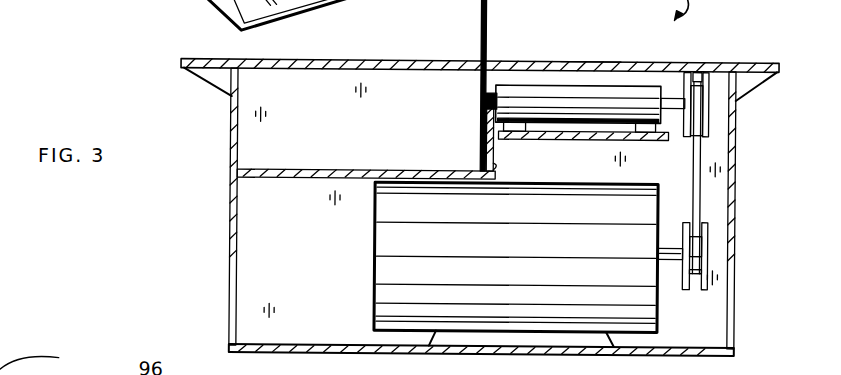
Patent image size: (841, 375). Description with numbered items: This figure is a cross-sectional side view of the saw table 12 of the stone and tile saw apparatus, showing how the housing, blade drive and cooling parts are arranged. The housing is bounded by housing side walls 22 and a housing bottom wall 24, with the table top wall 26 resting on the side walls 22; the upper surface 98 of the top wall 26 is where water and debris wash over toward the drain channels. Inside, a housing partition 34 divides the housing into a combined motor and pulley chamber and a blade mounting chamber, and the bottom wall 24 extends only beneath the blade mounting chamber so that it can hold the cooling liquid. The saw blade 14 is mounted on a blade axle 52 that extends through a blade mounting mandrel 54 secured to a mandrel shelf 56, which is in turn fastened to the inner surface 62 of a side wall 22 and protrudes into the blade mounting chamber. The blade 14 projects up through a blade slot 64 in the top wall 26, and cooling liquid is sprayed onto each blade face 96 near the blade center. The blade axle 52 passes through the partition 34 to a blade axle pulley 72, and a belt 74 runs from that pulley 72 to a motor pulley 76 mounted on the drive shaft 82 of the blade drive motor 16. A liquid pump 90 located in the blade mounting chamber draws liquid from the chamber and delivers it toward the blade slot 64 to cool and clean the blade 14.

The saw table 12 is at (748, 34).
The saw blade 14 is at (478, 10).
The blade drive motor 16 is at (377, 257).
The housing side walls 22 is at (230, 233).
The housing bottom wall 24 is at (344, 358).
The table top wall 26 is at (318, 60).
The housing partition 34 is at (486, 172).
The blade axle 52 is at (492, 90).
The blade mounting mandrel 54 is at (543, 96).
The mandrel shelf 56 is at (516, 140).
The inner surface 62 is at (723, 304).
The blade slot 64 is at (478, 56).
The blade axle pulley 72 is at (707, 107).
The belt 74 is at (692, 167).
The motor pulley 76 is at (709, 248).
The drive shaft 82 is at (676, 263).
The liquid pump 90 is at (486, 8).
The blade face 96 is at (479, 124).
The upper surface 98 is at (580, 61).